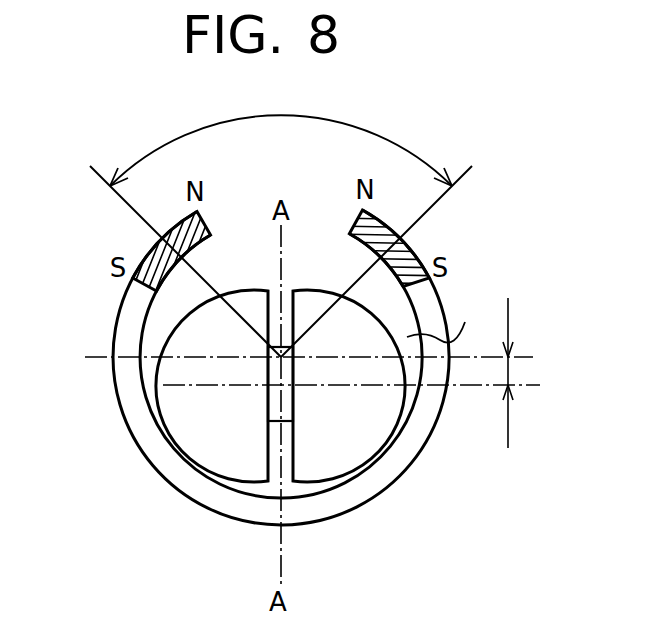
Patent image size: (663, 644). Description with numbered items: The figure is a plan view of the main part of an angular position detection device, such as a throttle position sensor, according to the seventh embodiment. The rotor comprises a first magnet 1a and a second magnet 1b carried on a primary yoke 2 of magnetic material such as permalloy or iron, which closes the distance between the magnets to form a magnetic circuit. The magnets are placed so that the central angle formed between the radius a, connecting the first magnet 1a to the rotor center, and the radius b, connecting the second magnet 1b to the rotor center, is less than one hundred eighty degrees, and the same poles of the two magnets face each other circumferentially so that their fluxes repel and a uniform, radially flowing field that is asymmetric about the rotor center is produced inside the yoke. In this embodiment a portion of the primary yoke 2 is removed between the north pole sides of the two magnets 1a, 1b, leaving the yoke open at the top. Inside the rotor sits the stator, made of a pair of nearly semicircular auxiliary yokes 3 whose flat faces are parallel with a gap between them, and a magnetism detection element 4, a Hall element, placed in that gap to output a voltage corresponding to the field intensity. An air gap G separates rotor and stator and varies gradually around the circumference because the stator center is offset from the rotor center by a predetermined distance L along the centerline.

The first magnet 1a is at (155, 245).
The second magnet 1b is at (402, 248).
The primary yoke 2 is at (113, 323).
The auxiliary yokes 3 is at (213, 437).
The magnetism detection element 4 is at (272, 410).
The air gap G is at (450, 324).
The predetermined distance L is at (520, 373).
The radius a is at (178, 247).
The radius b is at (383, 250).